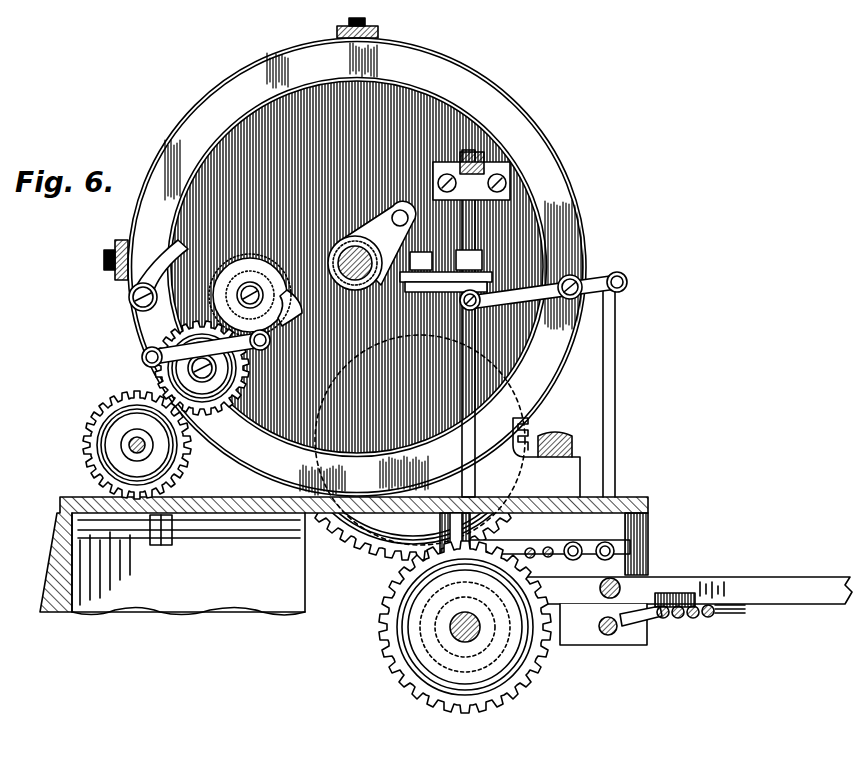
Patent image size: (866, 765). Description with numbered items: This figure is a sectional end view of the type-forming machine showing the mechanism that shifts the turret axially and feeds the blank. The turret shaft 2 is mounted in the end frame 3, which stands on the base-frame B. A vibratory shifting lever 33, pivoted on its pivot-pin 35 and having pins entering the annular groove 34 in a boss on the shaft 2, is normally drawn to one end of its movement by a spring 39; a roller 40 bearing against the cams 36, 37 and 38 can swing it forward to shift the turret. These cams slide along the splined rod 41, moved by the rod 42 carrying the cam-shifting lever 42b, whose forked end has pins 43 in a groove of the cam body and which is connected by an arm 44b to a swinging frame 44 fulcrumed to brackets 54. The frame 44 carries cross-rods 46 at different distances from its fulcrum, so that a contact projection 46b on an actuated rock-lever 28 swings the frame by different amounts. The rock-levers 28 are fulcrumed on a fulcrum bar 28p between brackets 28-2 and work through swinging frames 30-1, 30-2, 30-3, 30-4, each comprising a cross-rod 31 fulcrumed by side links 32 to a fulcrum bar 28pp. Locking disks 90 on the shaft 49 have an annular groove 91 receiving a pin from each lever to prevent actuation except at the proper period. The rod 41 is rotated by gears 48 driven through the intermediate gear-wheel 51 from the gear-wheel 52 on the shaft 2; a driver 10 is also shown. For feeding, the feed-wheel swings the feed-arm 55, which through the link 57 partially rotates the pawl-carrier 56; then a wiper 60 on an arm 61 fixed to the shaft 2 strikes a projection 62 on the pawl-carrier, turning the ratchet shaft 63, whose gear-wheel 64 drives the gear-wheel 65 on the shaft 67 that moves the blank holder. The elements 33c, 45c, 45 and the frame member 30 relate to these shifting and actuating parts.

The end frame 3 is at (565, 194).
The shaft 2 is at (336, 258).
The arm 33c is at (362, 238).
The wiper 60 is at (403, 211).
The arm 61 is at (430, 178).
The annular groove 34 is at (342, 250).
The projection 62 is at (333, 270).
The shifting lever 33 is at (356, 292).
The gear-wheel 52 is at (300, 222).
The spring 39 is at (252, 256).
The gear-wheel 64 is at (226, 262).
The cam 36 is at (224, 283).
The pivot-pin 35 is at (428, 252).
The swinging frame 30 is at (466, 240).
The roller 40 is at (484, 262).
The cam 38 is at (492, 276).
The cam 37 is at (488, 286).
The cam-shifting lever 42b is at (530, 298).
The pins 43 is at (480, 306).
The pivot 45c is at (596, 284).
The splined rod 41 is at (478, 388).
The rod 42 is at (603, 396).
The feed-arm 55 is at (158, 268).
The shaft 63 is at (237, 295).
The link 57 is at (150, 362).
The brackets 54 is at (282, 340).
The pawl-carrier 56 is at (232, 372).
The gear-wheel 65 is at (97, 445).
The shaft 67 is at (146, 447).
The base-frame B is at (188, 564).
The intermediate gear-wheel 51 is at (378, 540).
The bracket 45 is at (575, 540).
The contact projection 46b is at (548, 552).
The swinging frame 44 is at (482, 545).
The cross-rods 46 is at (528, 558).
The arm 44b is at (648, 532).
The rock-levers 28 is at (704, 578).
The fulcrum bar 28p is at (621, 589).
The bracket 28-2 is at (642, 566).
The side links 32 is at (636, 645).
The fulcrum bar 28pp is at (600, 636).
The swinging frame 30-1 is at (663, 612).
The swinging frame 30-2 is at (680, 618).
The swinging frame 30-3 is at (695, 618).
The swinging frame 30-4 is at (712, 616).
The cross-rod 31 is at (740, 612).
The gears 48 is at (420, 642).
The shaft 49 is at (460, 640).
The locking disk 90 is at (482, 640).
The annular groove 91 is at (440, 632).
The driver 10 is at (420, 610).